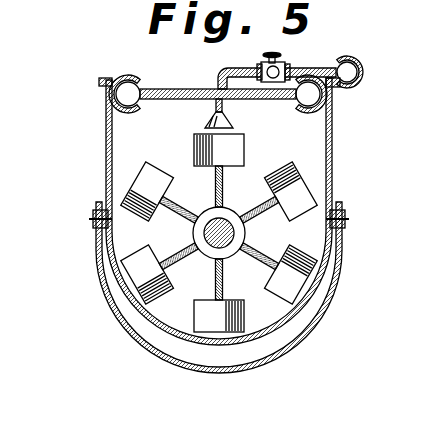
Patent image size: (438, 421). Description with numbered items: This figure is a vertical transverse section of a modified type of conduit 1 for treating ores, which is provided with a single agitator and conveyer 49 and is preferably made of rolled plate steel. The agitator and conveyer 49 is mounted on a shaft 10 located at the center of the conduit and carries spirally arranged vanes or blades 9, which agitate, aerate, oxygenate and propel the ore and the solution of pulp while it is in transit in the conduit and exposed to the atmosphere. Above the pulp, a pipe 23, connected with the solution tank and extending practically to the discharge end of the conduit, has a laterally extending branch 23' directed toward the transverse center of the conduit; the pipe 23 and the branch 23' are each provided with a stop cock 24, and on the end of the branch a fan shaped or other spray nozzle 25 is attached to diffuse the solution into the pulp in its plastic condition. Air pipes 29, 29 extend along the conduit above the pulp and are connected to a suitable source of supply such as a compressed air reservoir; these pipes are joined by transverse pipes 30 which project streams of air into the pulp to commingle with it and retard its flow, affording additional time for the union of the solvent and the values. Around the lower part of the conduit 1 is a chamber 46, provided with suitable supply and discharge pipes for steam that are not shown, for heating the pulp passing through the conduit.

The conduit 1 is at (334, 155).
The spirally arranged vanes or blades 9 is at (150, 183).
The shaft 10 is at (200, 235).
The pipe 23 is at (370, 60).
The laterally extending branch 23' is at (279, 61).
The stop cock 24 is at (263, 66).
The spray nozzle 25 is at (228, 114).
The pipe 29 is at (118, 99).
The transverse pipe 30 is at (175, 90).
The chamber 46 is at (303, 328).
The agitator and conveyer 49 is at (247, 237).